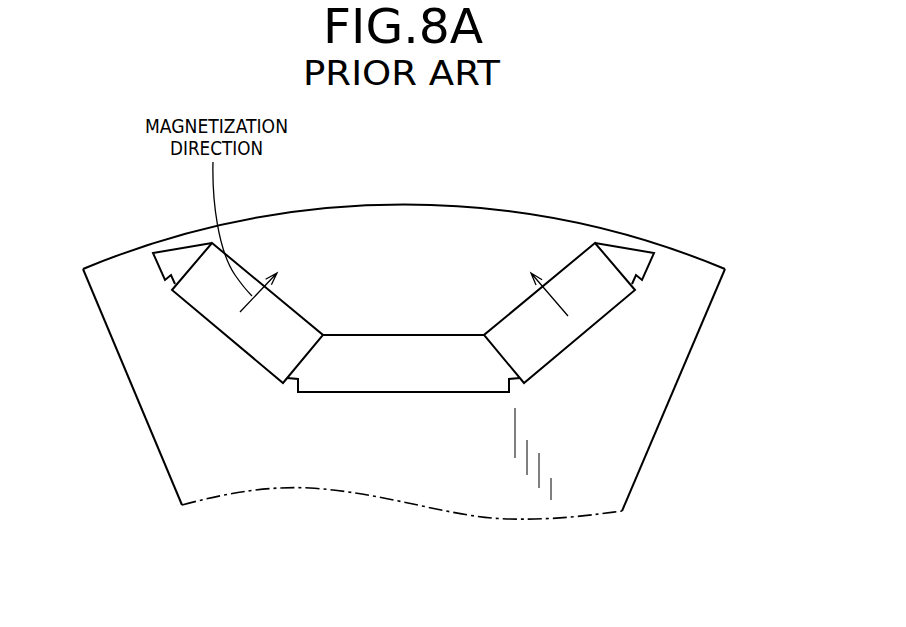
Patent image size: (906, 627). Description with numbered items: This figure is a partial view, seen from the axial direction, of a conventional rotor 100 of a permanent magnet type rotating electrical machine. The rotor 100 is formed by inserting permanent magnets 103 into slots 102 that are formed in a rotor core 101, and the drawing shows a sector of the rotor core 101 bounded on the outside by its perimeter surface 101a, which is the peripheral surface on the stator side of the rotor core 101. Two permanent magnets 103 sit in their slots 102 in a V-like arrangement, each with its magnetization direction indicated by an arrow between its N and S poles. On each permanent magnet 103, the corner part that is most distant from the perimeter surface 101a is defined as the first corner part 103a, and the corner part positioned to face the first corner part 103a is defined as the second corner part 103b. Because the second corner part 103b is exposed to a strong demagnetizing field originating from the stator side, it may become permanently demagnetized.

The rotor 100 is at (430, 310).
The rotor core 101 is at (620, 479).
The perimeter surface 101a is at (677, 252).
The slot 102 is at (221, 331).
The permanent magnet 103 is at (263, 352).
The first corner part 103a is at (283, 383).
The second corner part 103b is at (323, 335).